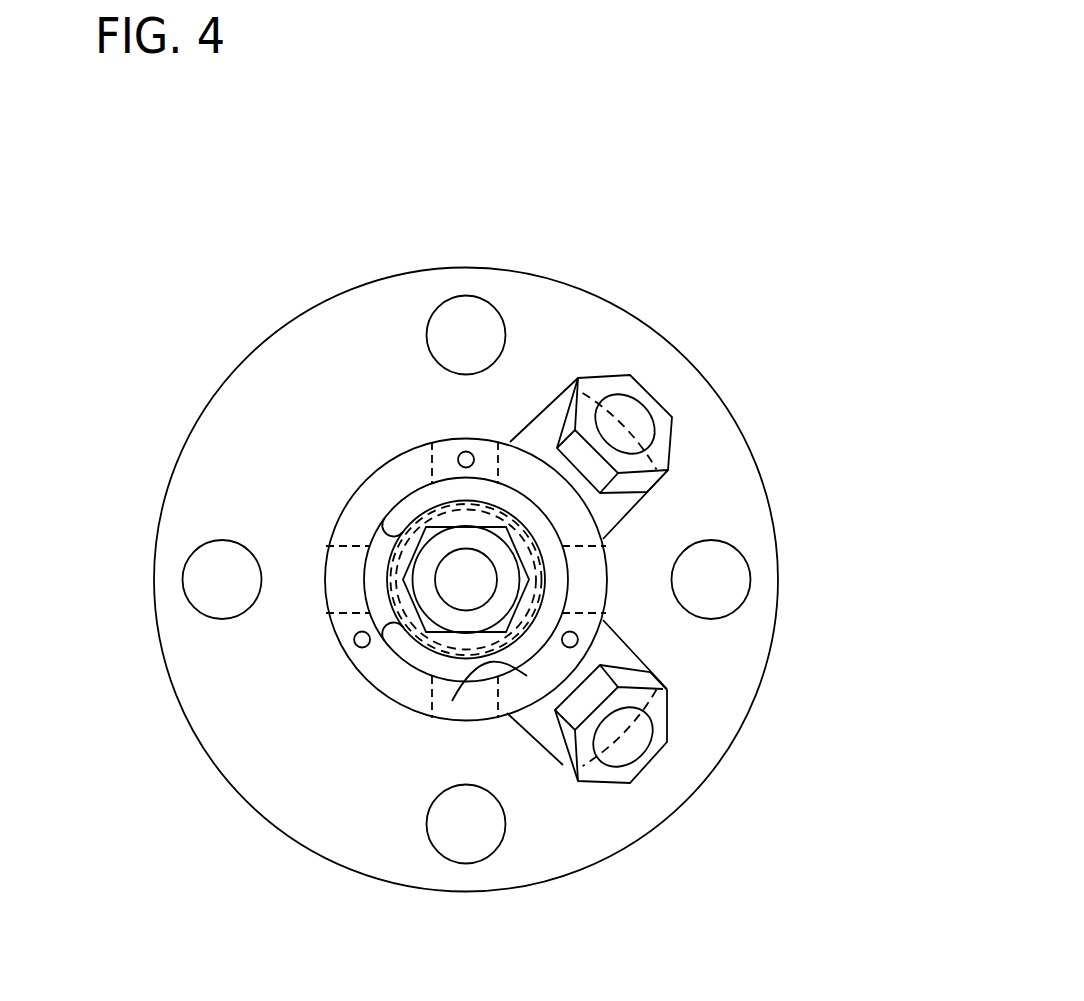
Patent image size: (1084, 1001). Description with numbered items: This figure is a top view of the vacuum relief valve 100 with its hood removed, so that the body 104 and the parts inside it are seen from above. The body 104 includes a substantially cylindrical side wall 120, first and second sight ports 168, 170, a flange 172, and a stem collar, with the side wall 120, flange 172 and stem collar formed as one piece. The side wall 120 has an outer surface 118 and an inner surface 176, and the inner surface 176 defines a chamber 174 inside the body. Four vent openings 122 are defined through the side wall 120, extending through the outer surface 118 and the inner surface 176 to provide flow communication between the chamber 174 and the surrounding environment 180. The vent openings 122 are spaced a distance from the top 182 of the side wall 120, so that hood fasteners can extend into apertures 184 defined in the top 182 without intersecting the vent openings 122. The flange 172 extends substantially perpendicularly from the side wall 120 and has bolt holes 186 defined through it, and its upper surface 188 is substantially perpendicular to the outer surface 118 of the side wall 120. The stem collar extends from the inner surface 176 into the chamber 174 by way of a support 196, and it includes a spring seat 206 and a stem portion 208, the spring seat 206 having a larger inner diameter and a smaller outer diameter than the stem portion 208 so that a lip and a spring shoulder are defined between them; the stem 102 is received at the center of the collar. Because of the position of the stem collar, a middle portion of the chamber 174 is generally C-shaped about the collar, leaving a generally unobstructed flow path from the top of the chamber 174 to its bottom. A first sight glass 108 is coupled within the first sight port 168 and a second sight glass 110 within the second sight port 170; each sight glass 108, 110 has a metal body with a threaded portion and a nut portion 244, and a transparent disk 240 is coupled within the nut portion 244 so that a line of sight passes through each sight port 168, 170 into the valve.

The vacuum relief valve 100 is at (704, 201).
The stem 102 is at (445, 593).
The body 104 is at (713, 383).
The first sight glass 108 is at (664, 728).
The second sight glass 110 is at (662, 443).
The outer surface 118 is at (348, 502).
The side wall 120 is at (413, 455).
The vent opening 122 is at (487, 448).
The first sight port 168 is at (617, 654).
The second sight port 170 is at (550, 413).
The flange 172 is at (345, 325).
The chamber 174 is at (437, 663).
The inner surface 176 is at (466, 680).
The surrounding environment 180 is at (945, 619).
The top 182 is at (379, 491).
The aperture 184 is at (462, 453).
The bolt hole 186 is at (476, 326).
The upper surface 188 is at (247, 422).
The support 196 is at (378, 605).
The spring seat 206 is at (518, 558).
The stem portion 208 is at (566, 541).
The transparent disk 240 is at (622, 424).
The nut portion 244 is at (665, 460).